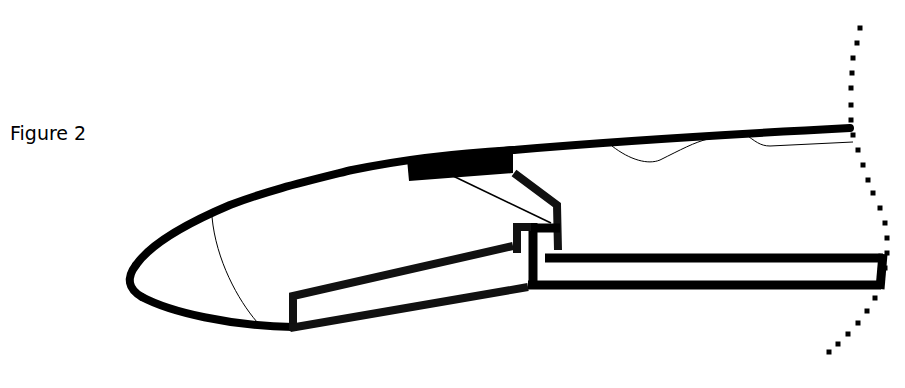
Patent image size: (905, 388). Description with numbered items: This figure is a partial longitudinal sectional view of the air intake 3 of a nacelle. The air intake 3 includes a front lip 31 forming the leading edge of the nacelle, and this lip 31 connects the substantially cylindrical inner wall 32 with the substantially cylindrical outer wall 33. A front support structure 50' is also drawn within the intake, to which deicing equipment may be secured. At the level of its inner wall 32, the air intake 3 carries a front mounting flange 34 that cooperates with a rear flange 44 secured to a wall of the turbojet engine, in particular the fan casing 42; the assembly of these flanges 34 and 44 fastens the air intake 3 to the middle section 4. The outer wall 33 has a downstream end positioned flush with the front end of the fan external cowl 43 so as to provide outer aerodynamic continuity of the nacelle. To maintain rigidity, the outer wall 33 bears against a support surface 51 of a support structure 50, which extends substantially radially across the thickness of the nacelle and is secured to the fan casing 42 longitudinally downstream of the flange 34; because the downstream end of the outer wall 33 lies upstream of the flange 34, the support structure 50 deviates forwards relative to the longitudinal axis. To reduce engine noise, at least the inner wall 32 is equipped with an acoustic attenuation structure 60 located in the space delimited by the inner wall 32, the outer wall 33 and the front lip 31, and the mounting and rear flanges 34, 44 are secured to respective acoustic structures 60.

The air intake 3 is at (460, 242).
The front lip 31 is at (130, 288).
The inner wall 32 is at (327, 328).
The outer wall 33 is at (353, 167).
The front mounting flange 34 is at (508, 239).
The middle section 4 is at (709, 190).
The fan casing 42 is at (707, 290).
The fan external cowl 43 is at (675, 132).
The rear flange 44 is at (564, 241).
The support structure 50 is at (515, 182).
The front support structure 50' is at (213, 293).
The support surface 51 is at (481, 160).
The acoustic attenuation structure 60 is at (403, 292).